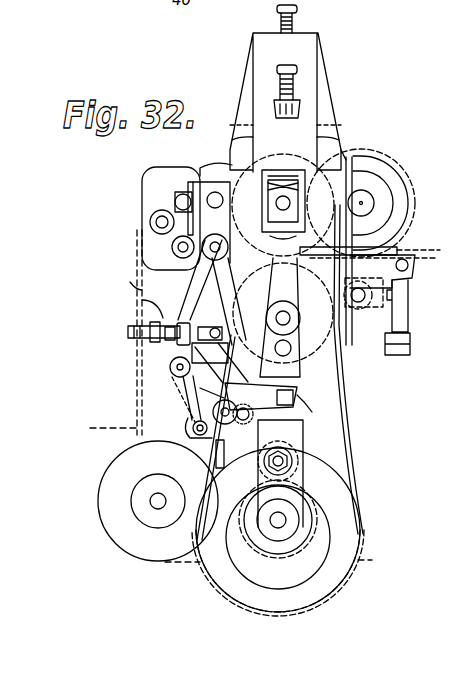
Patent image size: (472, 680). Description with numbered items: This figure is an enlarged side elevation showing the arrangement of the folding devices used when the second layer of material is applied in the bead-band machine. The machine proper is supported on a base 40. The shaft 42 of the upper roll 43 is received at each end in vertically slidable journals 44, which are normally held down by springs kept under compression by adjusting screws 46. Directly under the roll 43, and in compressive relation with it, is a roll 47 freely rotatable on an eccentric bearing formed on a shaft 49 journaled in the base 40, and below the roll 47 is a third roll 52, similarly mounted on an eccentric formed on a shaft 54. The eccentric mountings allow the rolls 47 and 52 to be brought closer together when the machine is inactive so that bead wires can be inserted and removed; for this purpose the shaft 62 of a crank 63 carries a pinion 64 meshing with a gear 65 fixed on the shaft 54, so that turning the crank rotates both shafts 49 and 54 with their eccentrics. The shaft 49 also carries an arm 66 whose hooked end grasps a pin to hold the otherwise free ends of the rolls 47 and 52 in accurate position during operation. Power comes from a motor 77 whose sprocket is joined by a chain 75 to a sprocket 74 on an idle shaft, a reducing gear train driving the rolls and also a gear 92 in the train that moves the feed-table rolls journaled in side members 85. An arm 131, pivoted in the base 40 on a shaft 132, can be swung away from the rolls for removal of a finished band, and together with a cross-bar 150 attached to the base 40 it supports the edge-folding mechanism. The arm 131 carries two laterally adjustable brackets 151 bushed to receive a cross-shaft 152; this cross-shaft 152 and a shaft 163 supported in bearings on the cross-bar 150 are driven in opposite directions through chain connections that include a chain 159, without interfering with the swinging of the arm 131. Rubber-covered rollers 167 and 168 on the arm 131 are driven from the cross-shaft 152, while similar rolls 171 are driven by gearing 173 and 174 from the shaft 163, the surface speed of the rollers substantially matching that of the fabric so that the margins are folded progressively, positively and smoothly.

The base 40 is at (323, 390).
The shaft 42 is at (232, 165).
The roll 43 is at (343, 152).
The vertically slidable journals 44 is at (283, 170).
The adjusting screws 46 is at (297, 17).
The roll 47 is at (345, 342).
The shaft 49 is at (283, 311).
The third roll 52 is at (360, 566).
The shaft 54 is at (282, 520).
The shaft 62 is at (292, 468).
The crank 63 is at (290, 436).
The pinion 64 is at (255, 482).
The gear 65 is at (275, 560).
The arm 66 is at (382, 250).
The sprocket 74 is at (137, 300).
The chain 75 is at (137, 430).
The motor 77 is at (125, 532).
The side members 85 is at (410, 278).
The gear 92 is at (412, 186).
The arm 131 is at (178, 272).
The shaft 132 is at (215, 240).
The cross-bar 150 is at (297, 403).
The brackets 151 is at (130, 331).
The cross-shaft 152 is at (170, 367).
The chain 159 is at (186, 402).
The shaft 163 is at (193, 428).
The roller 167 is at (234, 332).
The roller 168 is at (240, 376).
The rolls 171 is at (222, 407).
The gearing 173 is at (236, 426).
The gearing 174 is at (298, 390).